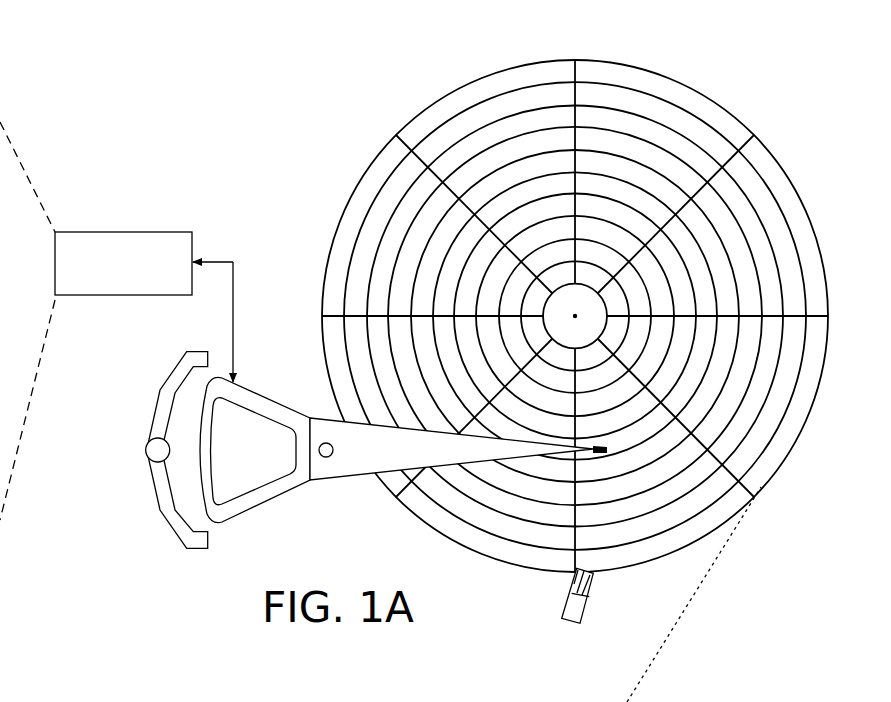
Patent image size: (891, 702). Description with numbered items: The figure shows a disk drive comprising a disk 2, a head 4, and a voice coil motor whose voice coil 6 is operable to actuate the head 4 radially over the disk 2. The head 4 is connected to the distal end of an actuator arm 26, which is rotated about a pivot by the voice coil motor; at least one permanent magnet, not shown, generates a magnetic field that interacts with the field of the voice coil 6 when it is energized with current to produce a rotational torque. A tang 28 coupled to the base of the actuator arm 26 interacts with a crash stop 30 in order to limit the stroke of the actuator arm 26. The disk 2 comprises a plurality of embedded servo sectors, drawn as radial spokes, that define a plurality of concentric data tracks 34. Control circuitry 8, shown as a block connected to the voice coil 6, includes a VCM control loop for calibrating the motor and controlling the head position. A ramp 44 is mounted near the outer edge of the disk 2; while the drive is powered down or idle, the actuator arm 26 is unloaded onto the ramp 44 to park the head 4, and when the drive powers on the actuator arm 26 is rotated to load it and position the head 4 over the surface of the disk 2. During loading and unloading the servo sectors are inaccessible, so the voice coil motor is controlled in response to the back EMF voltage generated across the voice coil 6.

The disk 2 is at (358, 123).
The head 4 is at (607, 445).
The voice coil 6 is at (245, 509).
The control circuitry 8 is at (123, 231).
The actuator arm 26 is at (321, 483).
The tang 28 is at (196, 450).
The crash stop 30 is at (143, 450).
The data tracks 34 is at (797, 233).
The ramp 44 is at (585, 608).